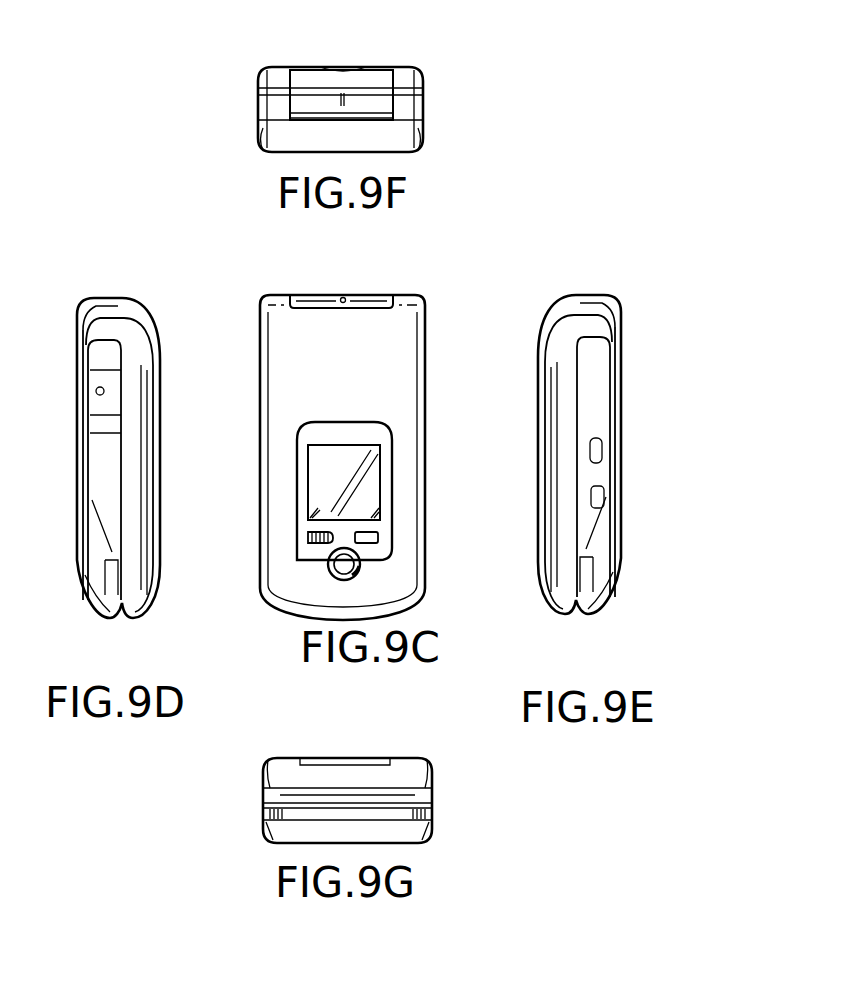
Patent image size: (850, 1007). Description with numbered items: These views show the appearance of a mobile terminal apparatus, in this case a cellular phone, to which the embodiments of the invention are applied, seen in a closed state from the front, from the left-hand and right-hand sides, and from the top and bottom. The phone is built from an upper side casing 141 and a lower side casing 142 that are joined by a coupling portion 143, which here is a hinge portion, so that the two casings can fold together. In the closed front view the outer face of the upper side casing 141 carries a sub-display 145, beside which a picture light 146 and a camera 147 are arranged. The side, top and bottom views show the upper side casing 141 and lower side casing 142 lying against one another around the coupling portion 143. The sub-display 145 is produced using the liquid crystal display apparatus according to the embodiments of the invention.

In FIG. 9F, the upper side casing 141 is at (400, 157).
In FIG. 9C, the upper side casing 141 is at (405, 333).
In FIG. 9D, the upper side casing 141 is at (123, 298).
In FIG. 9E, the upper side casing 141 is at (550, 606).
In FIG. 9G, the upper side casing 141 is at (415, 772).
In FIG. 9F, the lower side casing 142 is at (400, 64).
In FIG. 9D, the lower side casing 142 is at (90, 592).
In FIG. 9E, the lower side casing 142 is at (622, 335).
In FIG. 9G, the lower side casing 142 is at (417, 833).
In FIG. 9F, the coupling portion 143 is at (382, 100).
In FIG. 9C, the coupling portion 143 is at (313, 296).
In FIG. 9C, the sub-display 145 is at (344, 507).
In FIG. 9C, the picture light 146 is at (308, 538).
In FIG. 9C, the camera 147 is at (354, 577).